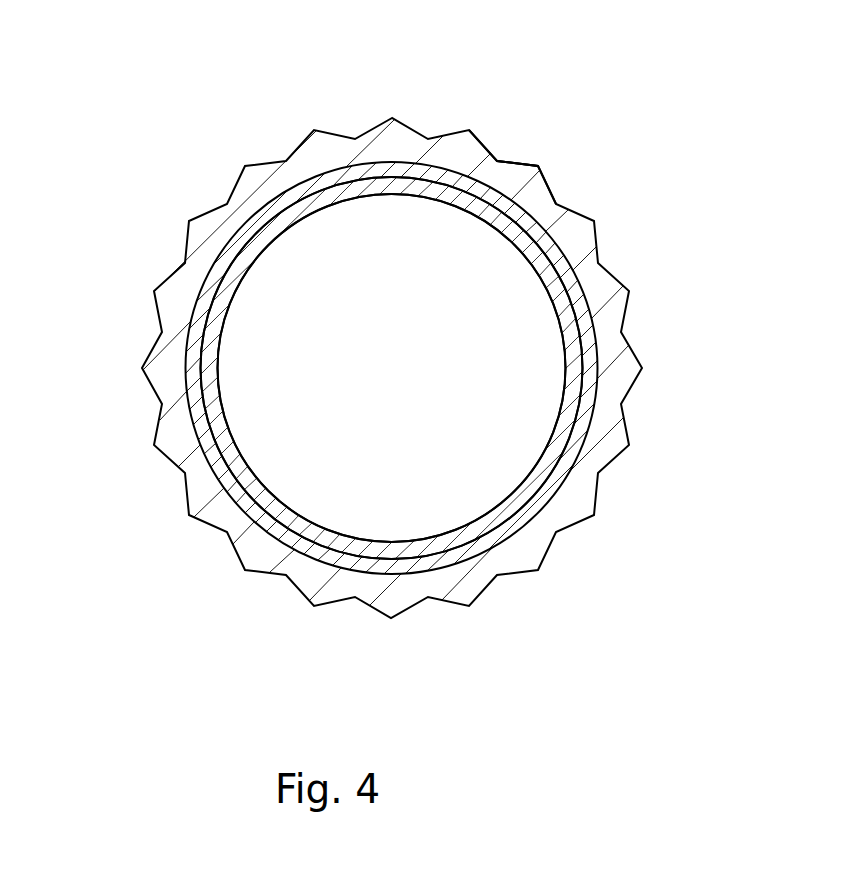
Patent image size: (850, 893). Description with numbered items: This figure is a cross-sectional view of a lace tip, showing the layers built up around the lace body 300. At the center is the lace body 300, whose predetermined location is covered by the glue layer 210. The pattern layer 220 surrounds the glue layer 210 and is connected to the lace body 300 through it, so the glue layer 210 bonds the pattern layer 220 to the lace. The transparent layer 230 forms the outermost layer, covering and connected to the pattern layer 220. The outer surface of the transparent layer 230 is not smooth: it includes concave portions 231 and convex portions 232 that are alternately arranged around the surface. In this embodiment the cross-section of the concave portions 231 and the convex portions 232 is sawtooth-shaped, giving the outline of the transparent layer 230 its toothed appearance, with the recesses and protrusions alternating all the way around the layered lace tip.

The transparent layer 230 is at (220, 218).
The concave portion 231 is at (497, 162).
The convex portion 232 is at (538, 167).
The pattern layer 220 is at (598, 260).
The glue layer 210 is at (577, 353).
The lace body 300 is at (547, 398).